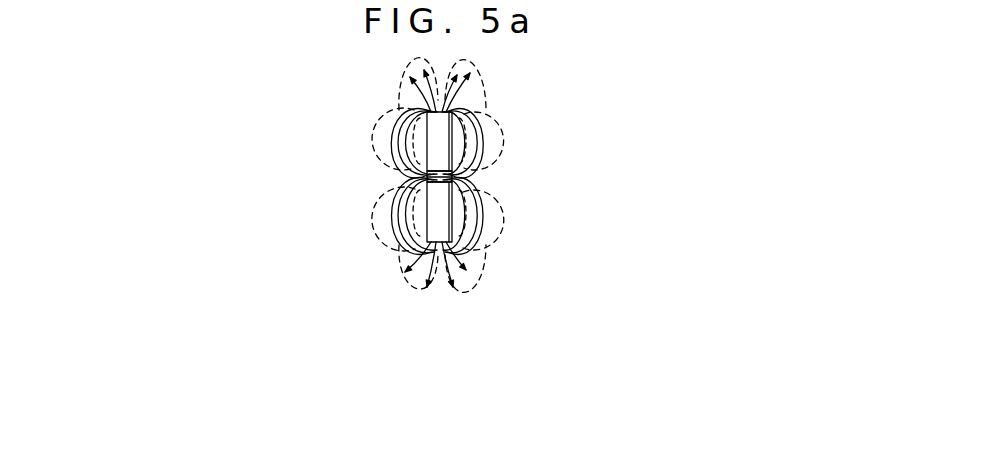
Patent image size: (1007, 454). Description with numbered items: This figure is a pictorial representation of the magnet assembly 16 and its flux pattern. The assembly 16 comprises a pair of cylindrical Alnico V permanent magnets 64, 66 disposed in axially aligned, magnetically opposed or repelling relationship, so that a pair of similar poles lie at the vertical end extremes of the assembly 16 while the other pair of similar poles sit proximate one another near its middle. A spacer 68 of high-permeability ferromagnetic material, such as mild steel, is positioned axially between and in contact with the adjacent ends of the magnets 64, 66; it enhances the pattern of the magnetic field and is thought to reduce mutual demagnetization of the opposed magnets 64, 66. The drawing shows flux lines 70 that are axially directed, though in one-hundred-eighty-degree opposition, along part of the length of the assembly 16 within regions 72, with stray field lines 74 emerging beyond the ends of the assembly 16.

The magnet assembly 16 is at (282, 163).
The permanent magnet 64 is at (447, 132).
The permanent magnet 66 is at (448, 207).
The spacer 68 is at (454, 176).
The flux lines 70 is at (473, 107).
The regions 72 is at (371, 125).
The stray field lines 74 is at (402, 75).